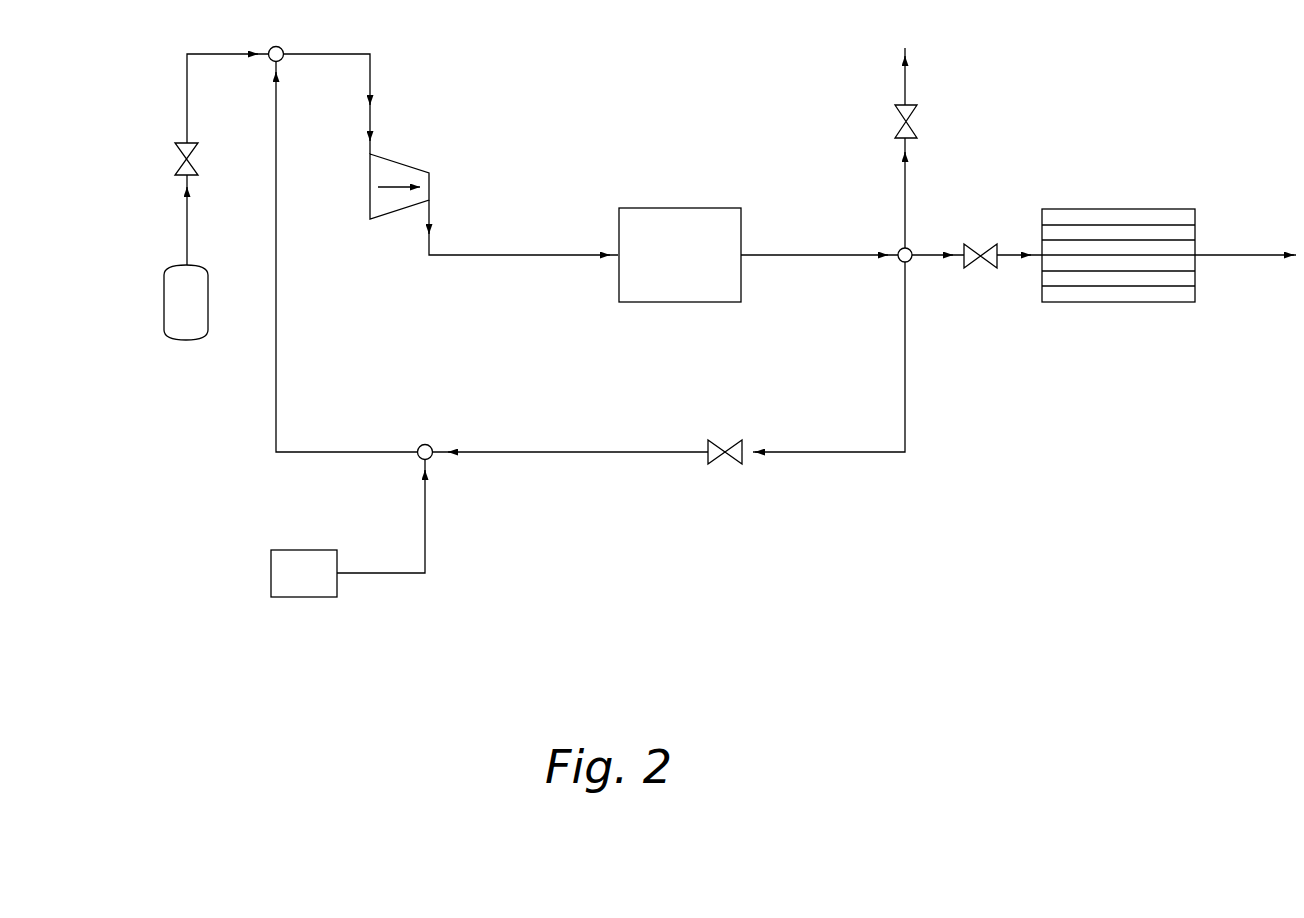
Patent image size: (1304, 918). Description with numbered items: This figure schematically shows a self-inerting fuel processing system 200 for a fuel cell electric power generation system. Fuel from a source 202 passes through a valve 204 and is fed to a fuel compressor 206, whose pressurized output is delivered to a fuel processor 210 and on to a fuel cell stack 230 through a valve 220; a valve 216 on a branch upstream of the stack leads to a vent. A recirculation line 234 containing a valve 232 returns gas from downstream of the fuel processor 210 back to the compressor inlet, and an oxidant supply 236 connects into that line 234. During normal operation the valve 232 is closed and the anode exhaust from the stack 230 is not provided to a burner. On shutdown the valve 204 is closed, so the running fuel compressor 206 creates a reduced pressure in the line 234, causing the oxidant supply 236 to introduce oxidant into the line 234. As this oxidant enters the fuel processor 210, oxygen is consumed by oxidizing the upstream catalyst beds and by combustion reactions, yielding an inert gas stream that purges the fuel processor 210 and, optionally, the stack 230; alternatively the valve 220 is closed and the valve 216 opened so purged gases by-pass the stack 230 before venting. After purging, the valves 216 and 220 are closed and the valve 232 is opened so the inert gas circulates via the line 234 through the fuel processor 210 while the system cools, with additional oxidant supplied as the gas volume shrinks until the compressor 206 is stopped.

The fuel processing system 200 is at (620, 133).
The gas source tank 202 is at (164, 290).
The valve 204 is at (176, 160).
The fuel compressor 206 is at (368, 187).
The fuel processor 210 is at (665, 262).
The valve 216 is at (893, 121).
The valve 220 is at (980, 246).
The fuel cell stack 230 is at (1100, 209).
The valve 232 is at (725, 449).
The line 234 is at (276, 335).
The oxidant supply 236 is at (282, 585).